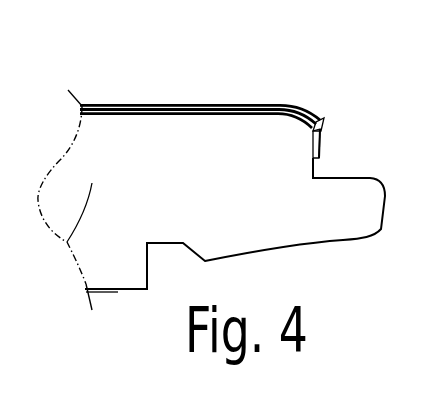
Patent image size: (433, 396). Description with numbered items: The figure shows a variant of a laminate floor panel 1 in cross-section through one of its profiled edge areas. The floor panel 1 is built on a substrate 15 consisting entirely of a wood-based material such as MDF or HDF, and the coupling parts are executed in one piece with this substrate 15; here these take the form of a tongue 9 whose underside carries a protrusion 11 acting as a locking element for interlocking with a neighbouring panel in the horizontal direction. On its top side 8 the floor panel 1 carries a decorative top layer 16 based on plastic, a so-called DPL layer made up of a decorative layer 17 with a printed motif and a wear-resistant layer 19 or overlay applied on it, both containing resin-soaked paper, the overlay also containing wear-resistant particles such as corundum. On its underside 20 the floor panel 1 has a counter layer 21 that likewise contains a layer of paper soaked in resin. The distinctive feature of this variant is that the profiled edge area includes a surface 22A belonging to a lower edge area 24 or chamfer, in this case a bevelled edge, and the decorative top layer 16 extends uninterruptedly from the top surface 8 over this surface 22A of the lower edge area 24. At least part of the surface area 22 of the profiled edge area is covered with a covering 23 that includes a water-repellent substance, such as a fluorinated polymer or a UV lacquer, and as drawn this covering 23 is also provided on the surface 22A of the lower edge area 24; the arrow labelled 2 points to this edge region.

The floor panel 1 is at (246, 60).
The edge region 2 is at (342, 127).
The top side 8 is at (112, 100).
The tongue 9 is at (347, 192).
The protrusion 11 is at (215, 242).
The substrate 15 is at (68, 243).
The decorative top layer 16 is at (80, 107).
The decorative layer 17 is at (173, 111).
The wear-resistant layer 19 is at (251, 104).
The underside 20 is at (112, 305).
The counter layer 21 is at (117, 293).
The surface area 22 is at (272, 246).
The surface 22A is at (316, 122).
The covering 23 is at (320, 145).
The lower edge area 24 is at (292, 127).